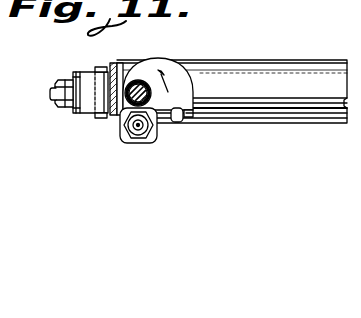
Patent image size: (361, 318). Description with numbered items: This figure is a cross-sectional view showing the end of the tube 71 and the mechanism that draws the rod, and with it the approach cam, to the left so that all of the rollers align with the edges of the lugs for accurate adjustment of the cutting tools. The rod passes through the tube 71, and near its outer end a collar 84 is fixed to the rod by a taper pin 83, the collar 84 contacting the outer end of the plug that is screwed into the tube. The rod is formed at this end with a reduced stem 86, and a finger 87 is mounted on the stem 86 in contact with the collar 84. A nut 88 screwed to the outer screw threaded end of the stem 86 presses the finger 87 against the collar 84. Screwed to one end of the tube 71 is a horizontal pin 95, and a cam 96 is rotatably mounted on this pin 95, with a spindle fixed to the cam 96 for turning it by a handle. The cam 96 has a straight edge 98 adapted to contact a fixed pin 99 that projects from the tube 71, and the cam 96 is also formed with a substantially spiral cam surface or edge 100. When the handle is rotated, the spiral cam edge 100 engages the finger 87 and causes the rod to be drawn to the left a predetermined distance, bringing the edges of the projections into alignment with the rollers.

The tube 71 is at (268, 113).
The taper pin 83 is at (99, 68).
The collar 84 is at (90, 113).
The reduced stem 86 is at (50, 97).
The finger 87 is at (83, 111).
The nut 88 is at (65, 110).
The horizontal pin 95 is at (126, 99).
The cam 96 is at (180, 82).
The straight edge 98 is at (191, 117).
The fixed pin 99 is at (175, 120).
The spiral cam surface 100 is at (157, 57).